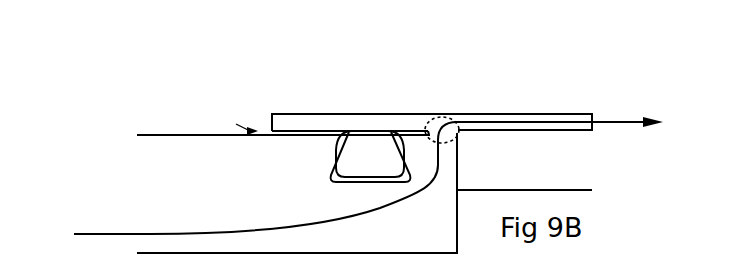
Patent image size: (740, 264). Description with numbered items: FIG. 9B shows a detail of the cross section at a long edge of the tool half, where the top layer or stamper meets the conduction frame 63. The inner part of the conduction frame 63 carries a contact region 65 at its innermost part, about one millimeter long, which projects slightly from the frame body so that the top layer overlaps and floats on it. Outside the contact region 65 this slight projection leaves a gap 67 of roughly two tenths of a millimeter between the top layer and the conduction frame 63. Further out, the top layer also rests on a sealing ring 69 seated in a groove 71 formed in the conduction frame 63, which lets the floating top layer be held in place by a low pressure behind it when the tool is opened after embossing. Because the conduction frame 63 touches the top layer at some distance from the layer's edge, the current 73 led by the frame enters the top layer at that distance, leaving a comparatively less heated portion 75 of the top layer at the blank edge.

The conduction frame 63 is at (172, 135).
The contact region 65 is at (457, 115).
The gap 67 is at (236, 124).
The sealing ring 69 is at (370, 153).
The groove 71 is at (330, 174).
The current 73 is at (615, 122).
The less heated portion 75 is at (312, 113).